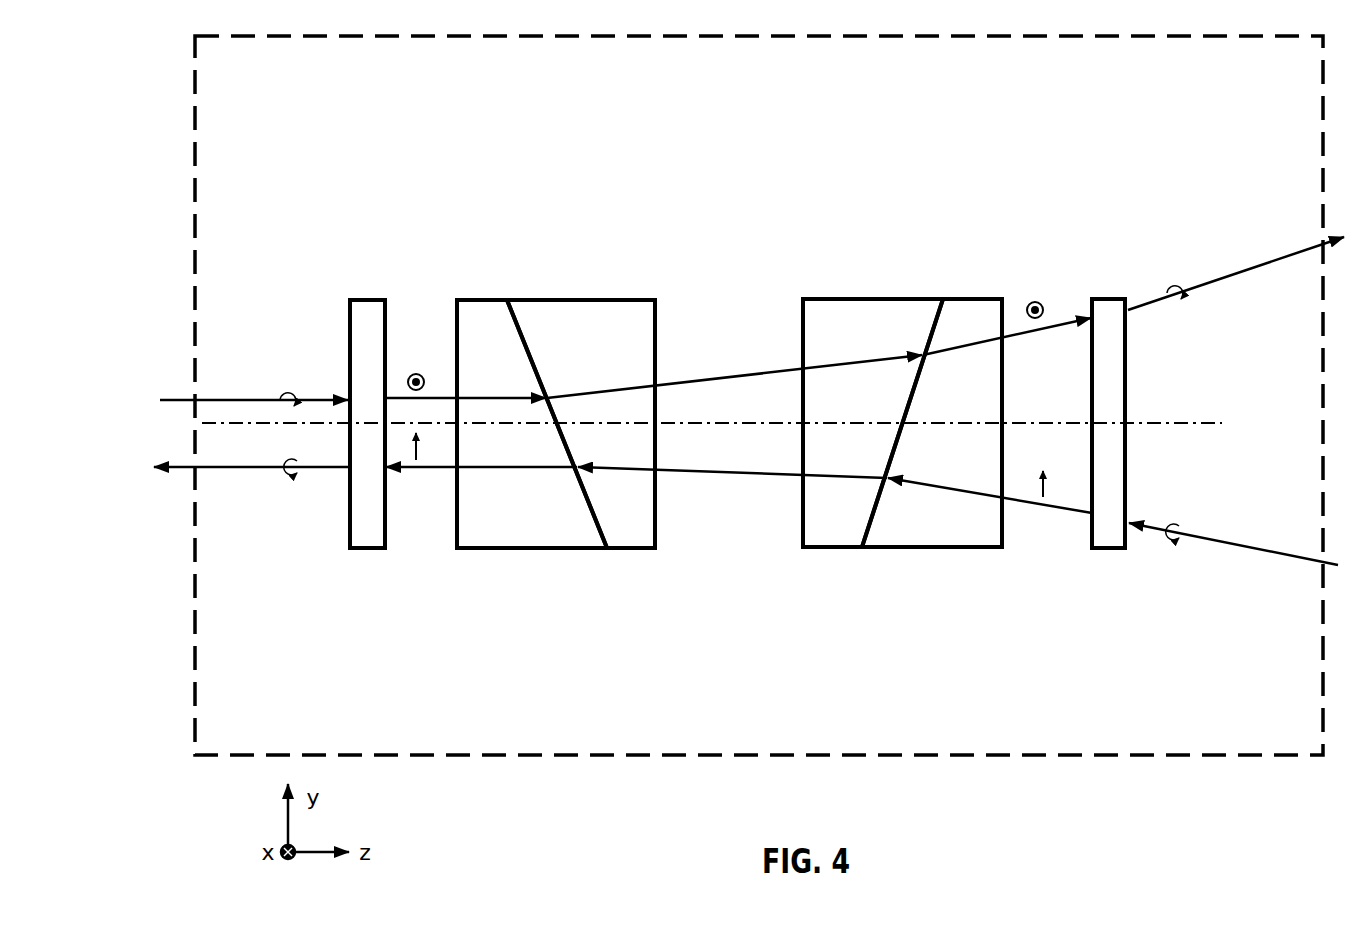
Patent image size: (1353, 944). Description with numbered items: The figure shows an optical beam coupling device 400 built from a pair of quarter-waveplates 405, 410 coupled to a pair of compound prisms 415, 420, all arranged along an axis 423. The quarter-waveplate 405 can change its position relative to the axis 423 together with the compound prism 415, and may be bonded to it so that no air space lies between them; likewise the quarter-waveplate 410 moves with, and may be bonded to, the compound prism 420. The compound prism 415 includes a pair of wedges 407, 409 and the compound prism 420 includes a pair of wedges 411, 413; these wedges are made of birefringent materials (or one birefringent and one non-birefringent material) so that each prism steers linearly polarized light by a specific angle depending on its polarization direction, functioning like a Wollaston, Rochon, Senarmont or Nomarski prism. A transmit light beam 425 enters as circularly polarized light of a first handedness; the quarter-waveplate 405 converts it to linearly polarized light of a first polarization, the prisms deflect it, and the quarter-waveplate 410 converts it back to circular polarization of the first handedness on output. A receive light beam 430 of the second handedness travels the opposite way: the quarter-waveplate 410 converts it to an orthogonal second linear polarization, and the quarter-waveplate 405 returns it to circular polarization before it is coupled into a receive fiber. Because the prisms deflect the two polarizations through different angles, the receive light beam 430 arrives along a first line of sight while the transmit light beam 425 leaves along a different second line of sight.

The optical beam coupling device 400 is at (312, 125).
The quarter-waveplate 405 is at (367, 297).
The wedge 407 is at (550, 495).
The wedge 409 is at (632, 495).
The quarter-waveplate 410 is at (1110, 297).
The wedge 411 is at (847, 503).
The wedge 413 is at (920, 523).
The compound prism 415 is at (577, 419).
The compound prism 420 is at (881, 424).
The axis 423 is at (220, 425).
The transmit light beam 425 is at (1205, 283).
The receive light beam 430 is at (1197, 538).